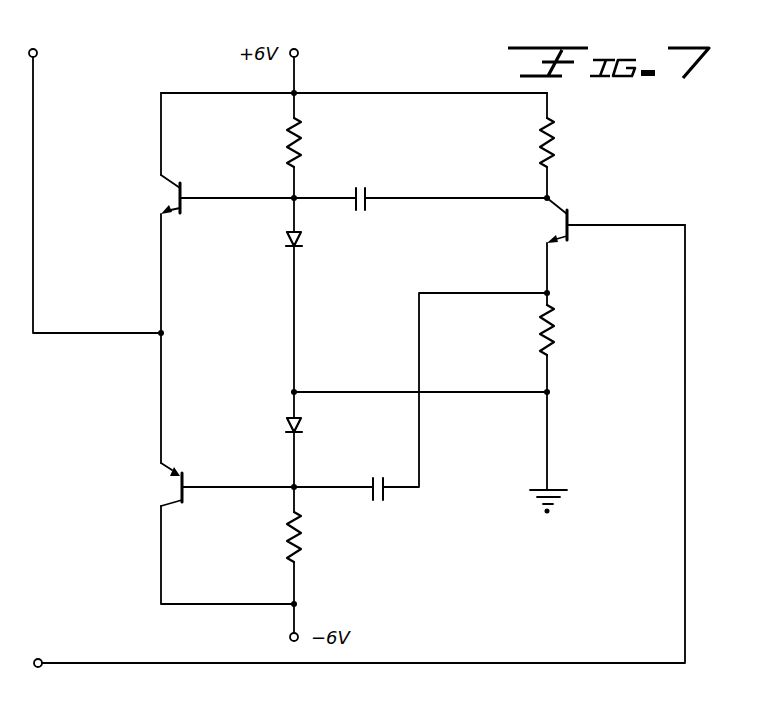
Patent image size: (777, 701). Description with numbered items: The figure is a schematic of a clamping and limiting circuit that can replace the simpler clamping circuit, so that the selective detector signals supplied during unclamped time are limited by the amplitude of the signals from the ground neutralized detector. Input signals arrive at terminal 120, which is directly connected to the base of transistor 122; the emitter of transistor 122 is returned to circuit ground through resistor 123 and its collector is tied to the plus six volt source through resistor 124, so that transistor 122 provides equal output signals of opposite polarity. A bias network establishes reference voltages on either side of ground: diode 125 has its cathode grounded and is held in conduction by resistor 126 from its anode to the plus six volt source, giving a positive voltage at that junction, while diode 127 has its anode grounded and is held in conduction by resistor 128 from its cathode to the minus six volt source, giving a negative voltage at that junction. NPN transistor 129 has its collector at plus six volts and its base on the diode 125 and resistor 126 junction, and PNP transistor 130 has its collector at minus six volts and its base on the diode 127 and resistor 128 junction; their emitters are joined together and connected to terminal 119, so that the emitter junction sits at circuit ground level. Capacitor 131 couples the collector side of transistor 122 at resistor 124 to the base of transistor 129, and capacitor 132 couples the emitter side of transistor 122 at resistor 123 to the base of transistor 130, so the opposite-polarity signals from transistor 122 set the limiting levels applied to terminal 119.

The terminal 119 is at (37, 55).
The terminal 120 is at (41, 658).
The transistor 122 is at (572, 215).
The resistor 123 is at (552, 343).
The resistor 124 is at (552, 138).
The diode 125 is at (290, 244).
The resistor 126 is at (300, 133).
The diode 127 is at (297, 436).
The resistor 128 is at (300, 527).
The transistor 129 is at (182, 185).
The transistor 130 is at (185, 480).
The capacitor 131 is at (368, 193).
The capacitor 132 is at (385, 489).